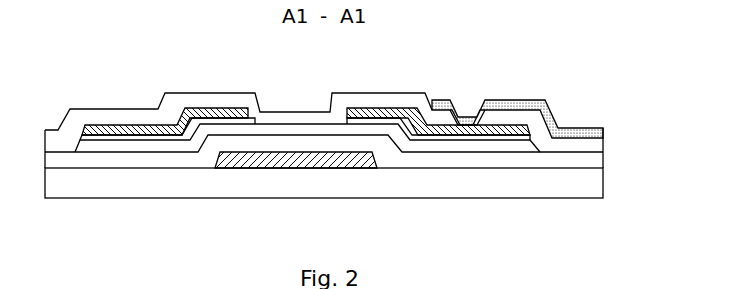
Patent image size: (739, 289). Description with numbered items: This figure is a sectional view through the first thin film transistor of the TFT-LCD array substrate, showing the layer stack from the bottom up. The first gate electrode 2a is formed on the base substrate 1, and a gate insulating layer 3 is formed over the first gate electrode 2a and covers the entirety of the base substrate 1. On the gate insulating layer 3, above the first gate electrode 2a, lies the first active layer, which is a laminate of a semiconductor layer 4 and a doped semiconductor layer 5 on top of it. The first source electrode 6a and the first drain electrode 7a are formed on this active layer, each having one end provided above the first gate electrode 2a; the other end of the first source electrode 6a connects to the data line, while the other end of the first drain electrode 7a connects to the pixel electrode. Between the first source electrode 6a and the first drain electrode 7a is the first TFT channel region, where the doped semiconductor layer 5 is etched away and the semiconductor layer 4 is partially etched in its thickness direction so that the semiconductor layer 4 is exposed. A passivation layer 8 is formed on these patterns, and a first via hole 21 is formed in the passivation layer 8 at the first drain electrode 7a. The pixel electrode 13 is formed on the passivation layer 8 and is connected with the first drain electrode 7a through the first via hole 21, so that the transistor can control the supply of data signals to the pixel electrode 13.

The base substrate 1 is at (523, 182).
The first gate electrode 2a is at (298, 160).
The gate insulating layer 3 is at (440, 160).
The semiconductor layer 4 is at (328, 132).
The doped semiconductor layer 5 is at (208, 128).
The first source electrode 6a is at (143, 128).
The first drain electrode 7a is at (375, 115).
The passivation layer 8 is at (273, 120).
The pixel electrode 13 is at (505, 105).
The first via hole 21 is at (466, 106).